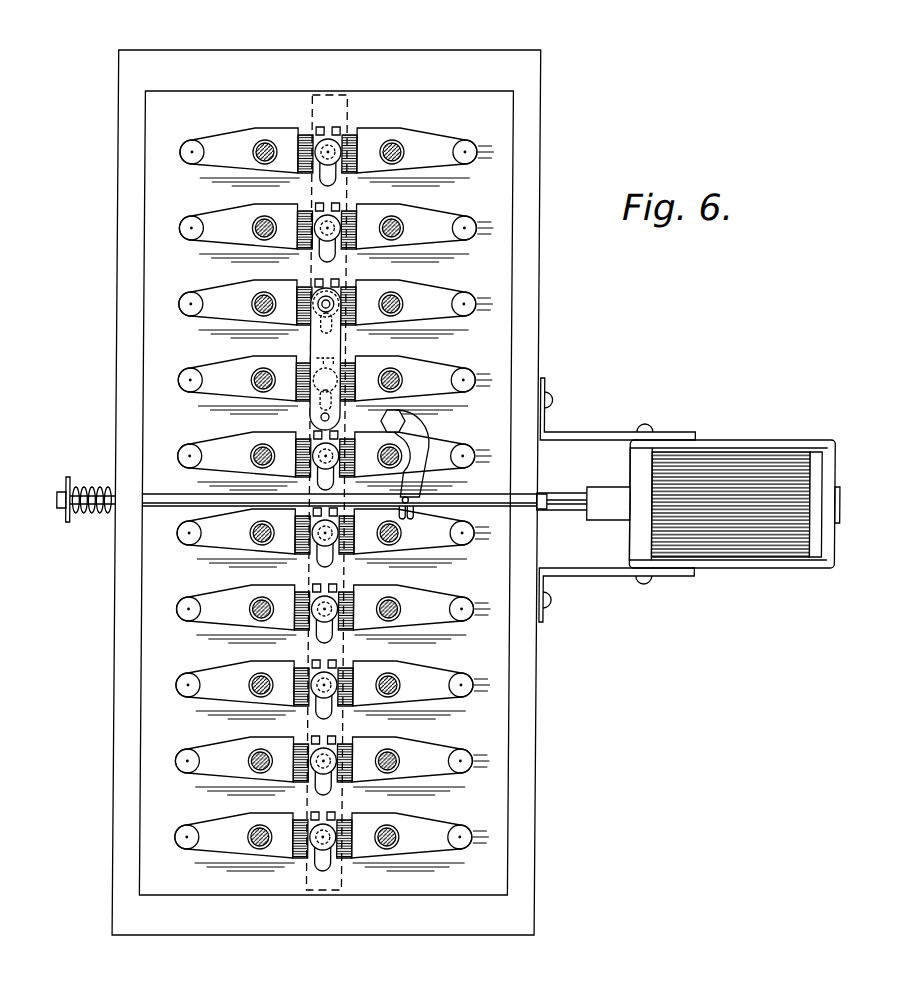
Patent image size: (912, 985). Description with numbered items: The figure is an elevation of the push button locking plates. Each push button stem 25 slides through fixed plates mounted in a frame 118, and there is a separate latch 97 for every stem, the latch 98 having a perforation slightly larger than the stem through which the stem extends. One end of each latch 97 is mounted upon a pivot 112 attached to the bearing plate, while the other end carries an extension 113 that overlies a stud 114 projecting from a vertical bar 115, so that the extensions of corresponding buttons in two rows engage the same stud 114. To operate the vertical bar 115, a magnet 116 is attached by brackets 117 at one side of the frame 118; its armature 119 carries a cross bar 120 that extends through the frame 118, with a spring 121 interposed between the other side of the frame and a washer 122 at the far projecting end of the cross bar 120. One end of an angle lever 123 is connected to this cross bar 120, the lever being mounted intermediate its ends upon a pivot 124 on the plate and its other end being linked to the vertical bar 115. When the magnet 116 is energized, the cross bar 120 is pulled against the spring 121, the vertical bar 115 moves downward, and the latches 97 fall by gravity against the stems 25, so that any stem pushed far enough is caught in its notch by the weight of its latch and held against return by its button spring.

The push button stem 25 is at (373, 111).
The latch 97 is at (387, 107).
The latch 98 is at (435, 88).
The pivot 112 is at (387, 139).
The extension 113 is at (330, 90).
The stud 114 is at (286, 168).
The vertical bar 115 is at (346, 340).
The magnet 116 is at (746, 532).
The brackets 117 is at (577, 432).
The frame 118 is at (540, 309).
The armature 119 is at (610, 493).
The cross bar 120 is at (173, 505).
The spring 121 is at (103, 515).
The washer 122 is at (70, 480).
The angle lever 123 is at (429, 440).
The pivot 124 is at (399, 415).